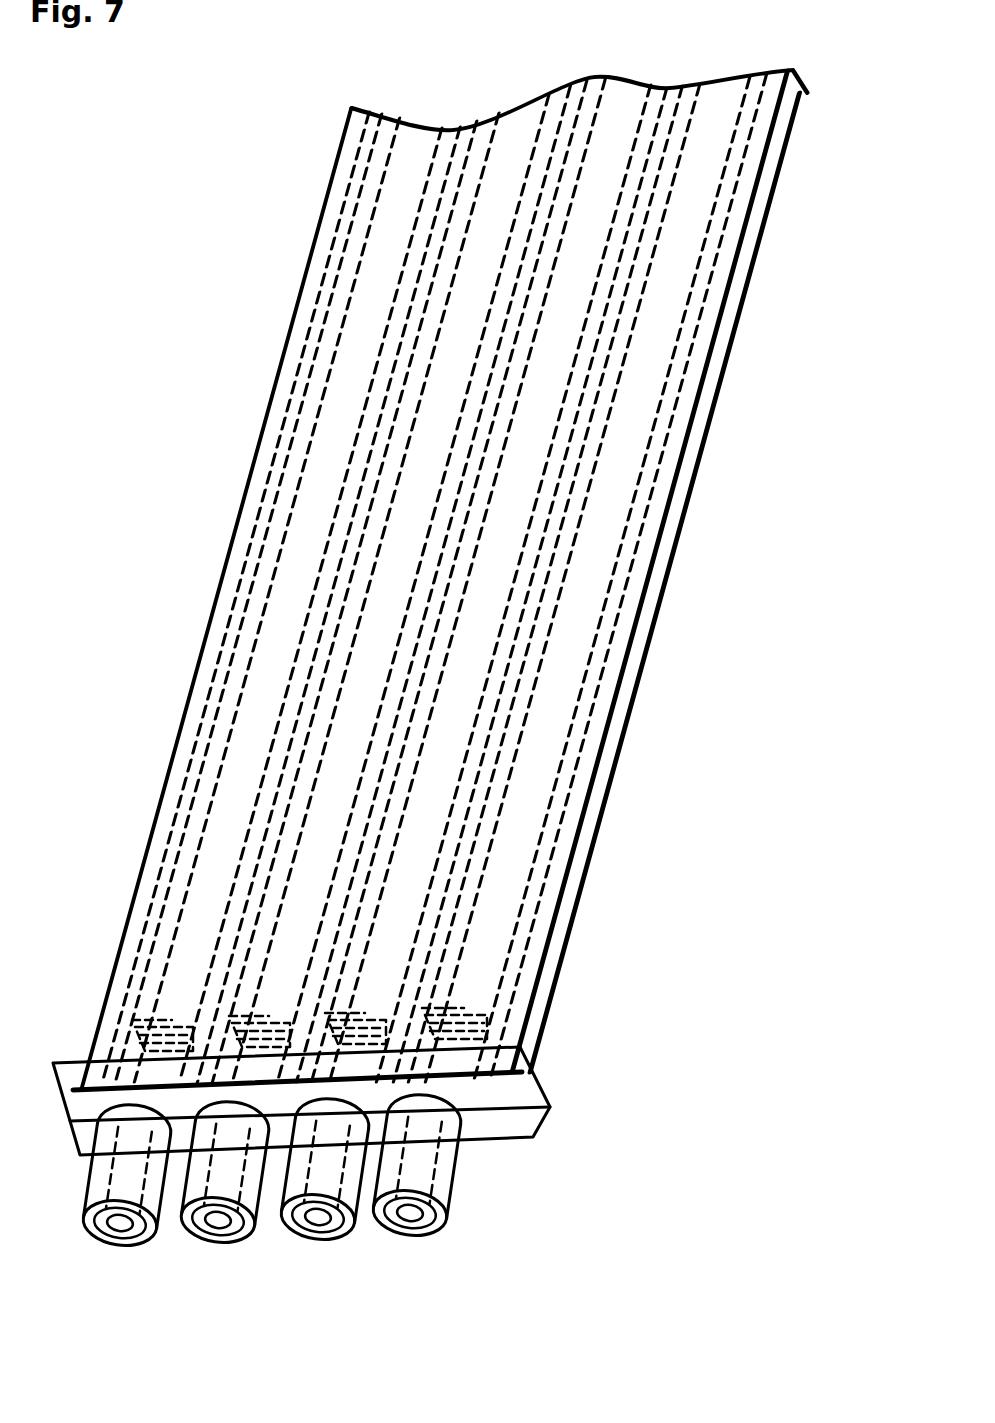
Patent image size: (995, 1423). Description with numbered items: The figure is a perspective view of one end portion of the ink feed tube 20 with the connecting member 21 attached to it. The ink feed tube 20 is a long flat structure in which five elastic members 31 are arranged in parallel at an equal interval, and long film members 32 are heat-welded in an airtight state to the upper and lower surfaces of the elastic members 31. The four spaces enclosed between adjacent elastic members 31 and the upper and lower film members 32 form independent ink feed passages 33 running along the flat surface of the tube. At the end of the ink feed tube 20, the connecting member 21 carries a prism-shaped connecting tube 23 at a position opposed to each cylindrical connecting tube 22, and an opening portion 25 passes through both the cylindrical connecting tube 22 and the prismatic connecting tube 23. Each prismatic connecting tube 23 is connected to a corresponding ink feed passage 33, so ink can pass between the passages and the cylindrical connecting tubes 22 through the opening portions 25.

The ink feed tube 20 is at (198, 594).
The connecting member 21 is at (548, 1080).
The connecting tube 22 is at (465, 1178).
The connecting tube 23 is at (146, 1028).
The opening portion 25 is at (122, 1233).
The elastic member 31 is at (614, 746).
The film member 32 is at (645, 583).
The ink feed passage 33 is at (598, 543).